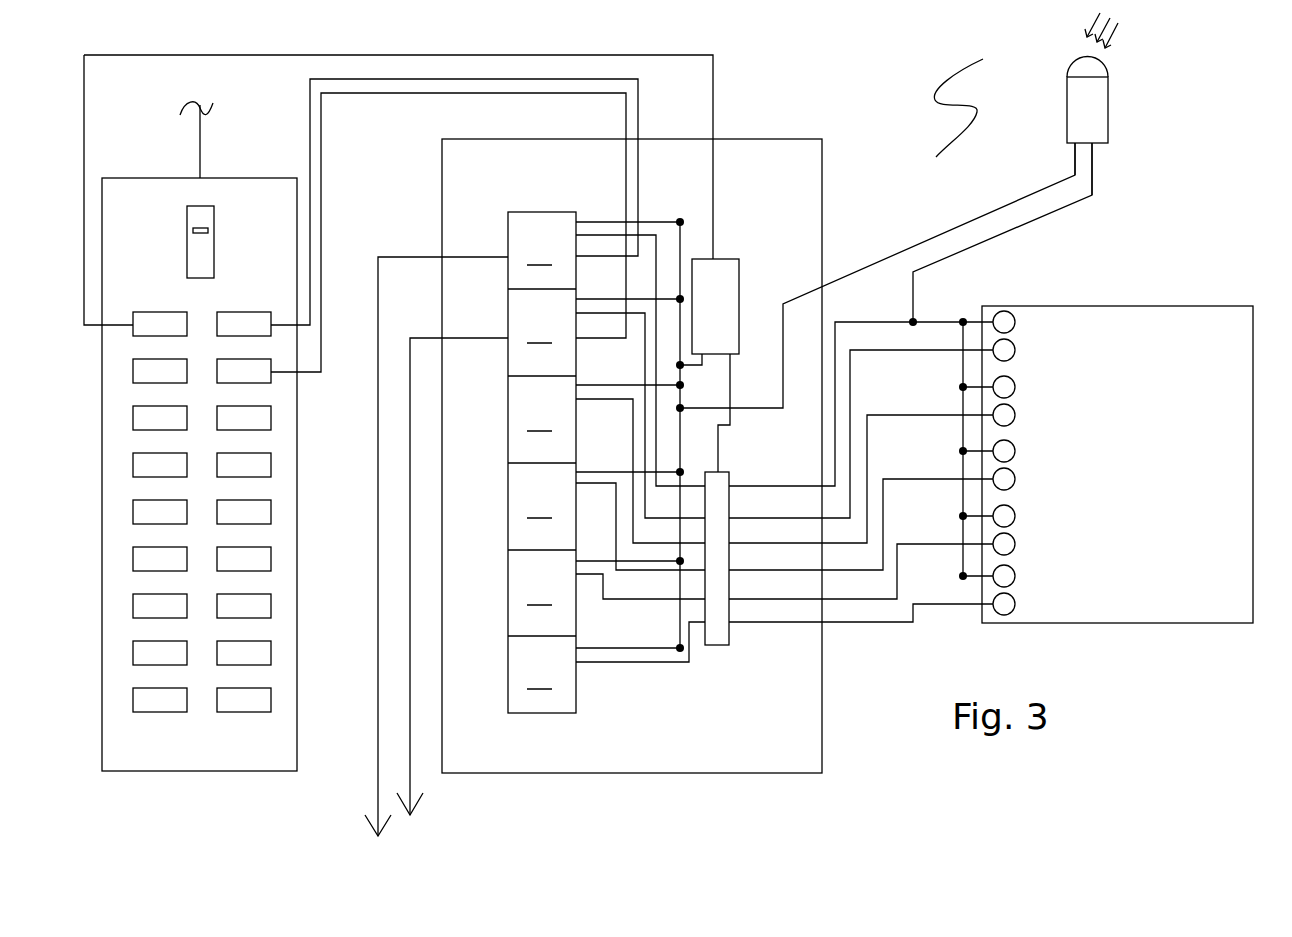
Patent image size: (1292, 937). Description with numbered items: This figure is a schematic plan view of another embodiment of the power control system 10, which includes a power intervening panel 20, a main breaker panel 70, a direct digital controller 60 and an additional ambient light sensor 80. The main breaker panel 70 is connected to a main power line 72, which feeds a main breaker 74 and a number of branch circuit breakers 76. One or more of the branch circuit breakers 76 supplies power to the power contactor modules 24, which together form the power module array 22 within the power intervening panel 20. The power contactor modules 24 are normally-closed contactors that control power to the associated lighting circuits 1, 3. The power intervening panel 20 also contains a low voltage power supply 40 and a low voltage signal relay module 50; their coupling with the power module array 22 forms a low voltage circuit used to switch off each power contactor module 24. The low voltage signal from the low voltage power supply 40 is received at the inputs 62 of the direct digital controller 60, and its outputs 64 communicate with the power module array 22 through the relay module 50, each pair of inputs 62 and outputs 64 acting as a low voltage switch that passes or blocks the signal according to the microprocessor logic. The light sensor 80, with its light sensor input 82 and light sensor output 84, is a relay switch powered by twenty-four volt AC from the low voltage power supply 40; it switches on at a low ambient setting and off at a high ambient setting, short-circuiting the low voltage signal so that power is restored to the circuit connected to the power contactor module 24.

The lighting circuit 1 is at (378, 701).
The lighting circuit 3 is at (410, 732).
The power control system 10 is at (981, 96).
The power intervening panel 20 is at (750, 139).
The power module array 22 is at (537, 212).
The power contactor module 24 is at (542, 466).
The low voltage power supply 40 is at (739, 311).
The low voltage signal relay module 50 is at (726, 471).
The direct digital controller 60 is at (1081, 306).
The inputs 62 is at (1030, 451).
The outputs 64 is at (1060, 479).
The main breaker panel 70 is at (195, 771).
The main power line 72 is at (197, 146).
The main breaker 74 is at (186, 226).
The branch circuit breaker 76 is at (215, 367).
The ambient light sensor 80 is at (1110, 104).
The light sensor input 82 is at (1095, 146).
The light sensor output 84 is at (1074, 148).